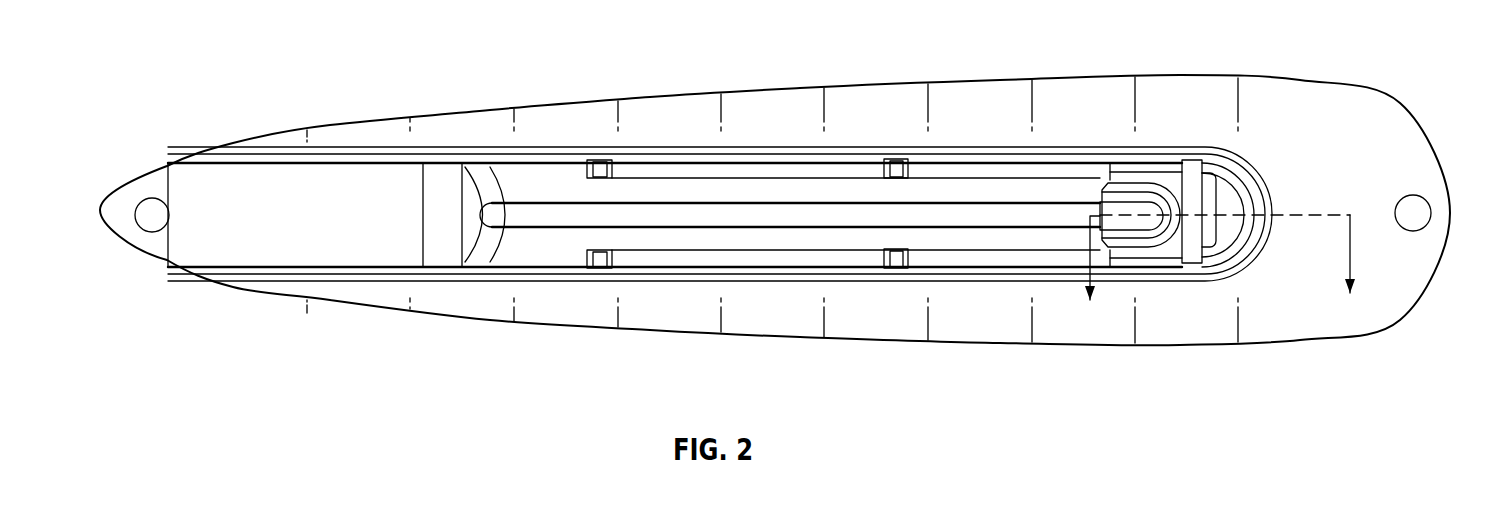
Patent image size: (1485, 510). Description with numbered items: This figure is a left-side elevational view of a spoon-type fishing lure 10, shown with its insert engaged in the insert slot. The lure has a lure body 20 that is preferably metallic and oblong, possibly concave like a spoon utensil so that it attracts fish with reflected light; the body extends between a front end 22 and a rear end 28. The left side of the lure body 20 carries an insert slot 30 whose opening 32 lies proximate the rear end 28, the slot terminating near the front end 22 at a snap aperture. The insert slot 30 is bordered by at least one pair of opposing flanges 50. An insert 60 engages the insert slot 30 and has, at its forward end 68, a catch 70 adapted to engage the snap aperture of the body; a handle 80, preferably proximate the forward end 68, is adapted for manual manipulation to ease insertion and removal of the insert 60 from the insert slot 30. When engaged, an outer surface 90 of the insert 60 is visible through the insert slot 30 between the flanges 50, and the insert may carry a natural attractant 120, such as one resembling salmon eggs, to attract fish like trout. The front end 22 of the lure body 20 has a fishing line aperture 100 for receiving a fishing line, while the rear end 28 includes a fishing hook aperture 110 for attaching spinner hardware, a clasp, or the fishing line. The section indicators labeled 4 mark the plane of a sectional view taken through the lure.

The fishing lure 10 is at (200, 50).
The lure body 20 is at (757, 310).
The front end 22 is at (1382, 126).
The rear end 28 is at (172, 250).
The insert slot 30 is at (1233, 211).
The opening 32 is at (423, 205).
The opposing flanges 50 is at (600, 160).
The insert 60 is at (845, 188).
The forward end 68 is at (1215, 227).
The catch 70 is at (1215, 195).
The handle 80 is at (1133, 197).
The outer surface 90 is at (790, 135).
The natural attractant 120 is at (777, 210).
The fishing line aperture 100 is at (1413, 232).
The fishing hook aperture 110 is at (170, 215).
The section line 4- 4 is at (1219, 276).